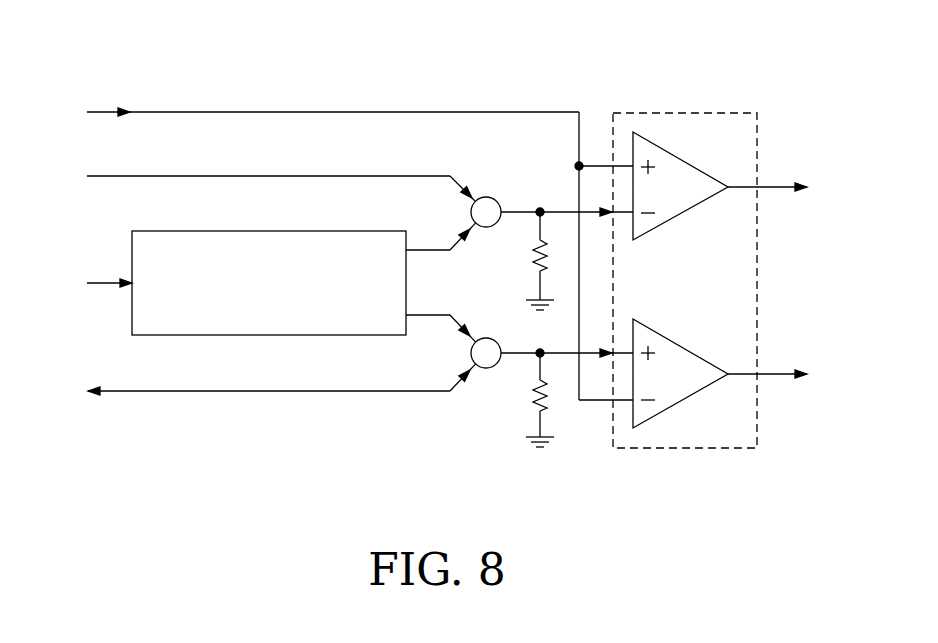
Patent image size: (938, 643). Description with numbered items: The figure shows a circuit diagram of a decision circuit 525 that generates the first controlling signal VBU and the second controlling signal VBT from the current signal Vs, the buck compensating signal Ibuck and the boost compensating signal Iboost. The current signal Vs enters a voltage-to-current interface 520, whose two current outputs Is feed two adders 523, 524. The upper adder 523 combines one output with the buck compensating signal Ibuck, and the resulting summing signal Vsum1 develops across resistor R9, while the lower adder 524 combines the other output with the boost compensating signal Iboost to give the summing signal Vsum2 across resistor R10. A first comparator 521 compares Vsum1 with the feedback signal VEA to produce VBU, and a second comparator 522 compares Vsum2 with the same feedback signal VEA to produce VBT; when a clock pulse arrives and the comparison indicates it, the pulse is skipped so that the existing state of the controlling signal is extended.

The current balance control circuit 525 is at (84, 34).
The voltage-to-current interface 520 is at (132, 248).
The adder 523 is at (497, 197).
The adder 524 is at (480, 367).
The first comparator 521 is at (701, 205).
The second comparator 522 is at (701, 392).